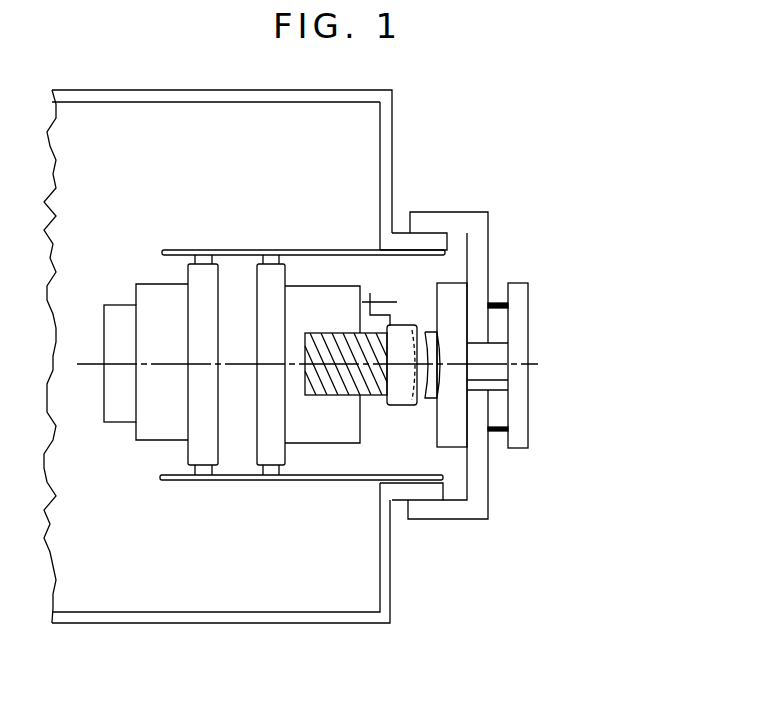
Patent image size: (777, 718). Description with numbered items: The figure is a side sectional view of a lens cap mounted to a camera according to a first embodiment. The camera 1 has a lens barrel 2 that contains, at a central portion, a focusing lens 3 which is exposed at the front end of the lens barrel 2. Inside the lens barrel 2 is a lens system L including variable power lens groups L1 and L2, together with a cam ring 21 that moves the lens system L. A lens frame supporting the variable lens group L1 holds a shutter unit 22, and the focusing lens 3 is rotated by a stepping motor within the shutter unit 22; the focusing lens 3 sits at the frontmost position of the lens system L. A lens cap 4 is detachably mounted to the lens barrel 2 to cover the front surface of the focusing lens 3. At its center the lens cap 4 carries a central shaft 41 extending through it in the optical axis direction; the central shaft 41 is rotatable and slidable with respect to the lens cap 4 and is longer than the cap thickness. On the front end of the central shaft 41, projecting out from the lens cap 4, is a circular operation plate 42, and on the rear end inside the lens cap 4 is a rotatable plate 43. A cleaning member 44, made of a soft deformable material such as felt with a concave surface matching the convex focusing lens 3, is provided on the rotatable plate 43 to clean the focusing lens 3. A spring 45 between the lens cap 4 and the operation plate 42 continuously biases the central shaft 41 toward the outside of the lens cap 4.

The camera 1 is at (398, 608).
The lens barrel 2 is at (397, 237).
The focusing lens 3 is at (400, 400).
The lens cap 4 is at (472, 213).
The cam ring 21 is at (330, 482).
The shutter unit 22 is at (318, 293).
The central shaft 41 is at (495, 403).
The operation plate 42 is at (518, 440).
The rotatable plate 43 is at (450, 440).
The cleaning member 44 is at (425, 333).
The spring 45 is at (497, 433).
The lens system L is at (274, 372).
The variable power lens group L1 is at (253, 455).
The variable power lens group L2 is at (190, 454).